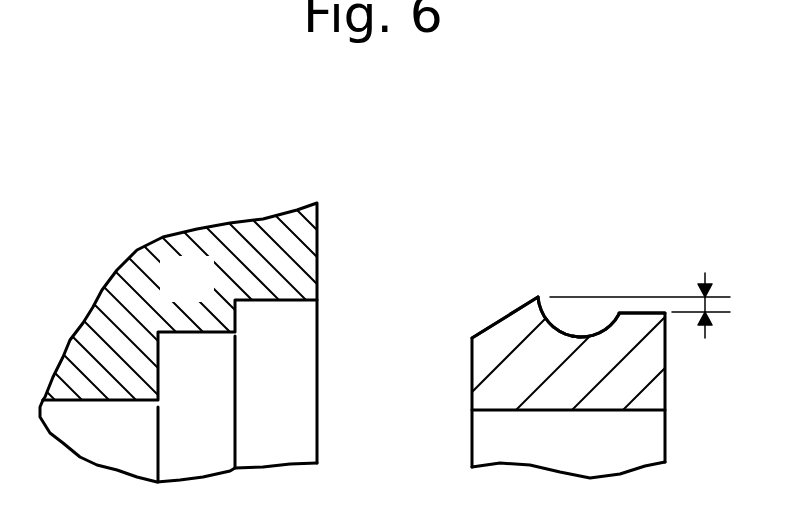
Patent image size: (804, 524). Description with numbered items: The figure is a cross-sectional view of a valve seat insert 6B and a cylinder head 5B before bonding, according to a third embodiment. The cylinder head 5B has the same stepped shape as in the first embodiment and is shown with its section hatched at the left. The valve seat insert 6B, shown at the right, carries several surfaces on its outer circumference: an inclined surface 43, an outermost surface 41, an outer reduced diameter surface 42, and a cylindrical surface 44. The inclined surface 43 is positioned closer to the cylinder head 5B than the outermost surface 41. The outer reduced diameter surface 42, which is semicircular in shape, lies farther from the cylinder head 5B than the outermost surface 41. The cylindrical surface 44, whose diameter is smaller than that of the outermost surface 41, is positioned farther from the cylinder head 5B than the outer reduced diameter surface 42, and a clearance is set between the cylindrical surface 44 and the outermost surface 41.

The cylinder head 5B is at (210, 297).
The valve seat insert 6B is at (597, 462).
The outermost surface 41 is at (538, 297).
The outer reduced diameter surface 42 is at (588, 337).
The inclined surface 43 is at (510, 314).
The cylindrical surface 44 is at (650, 313).